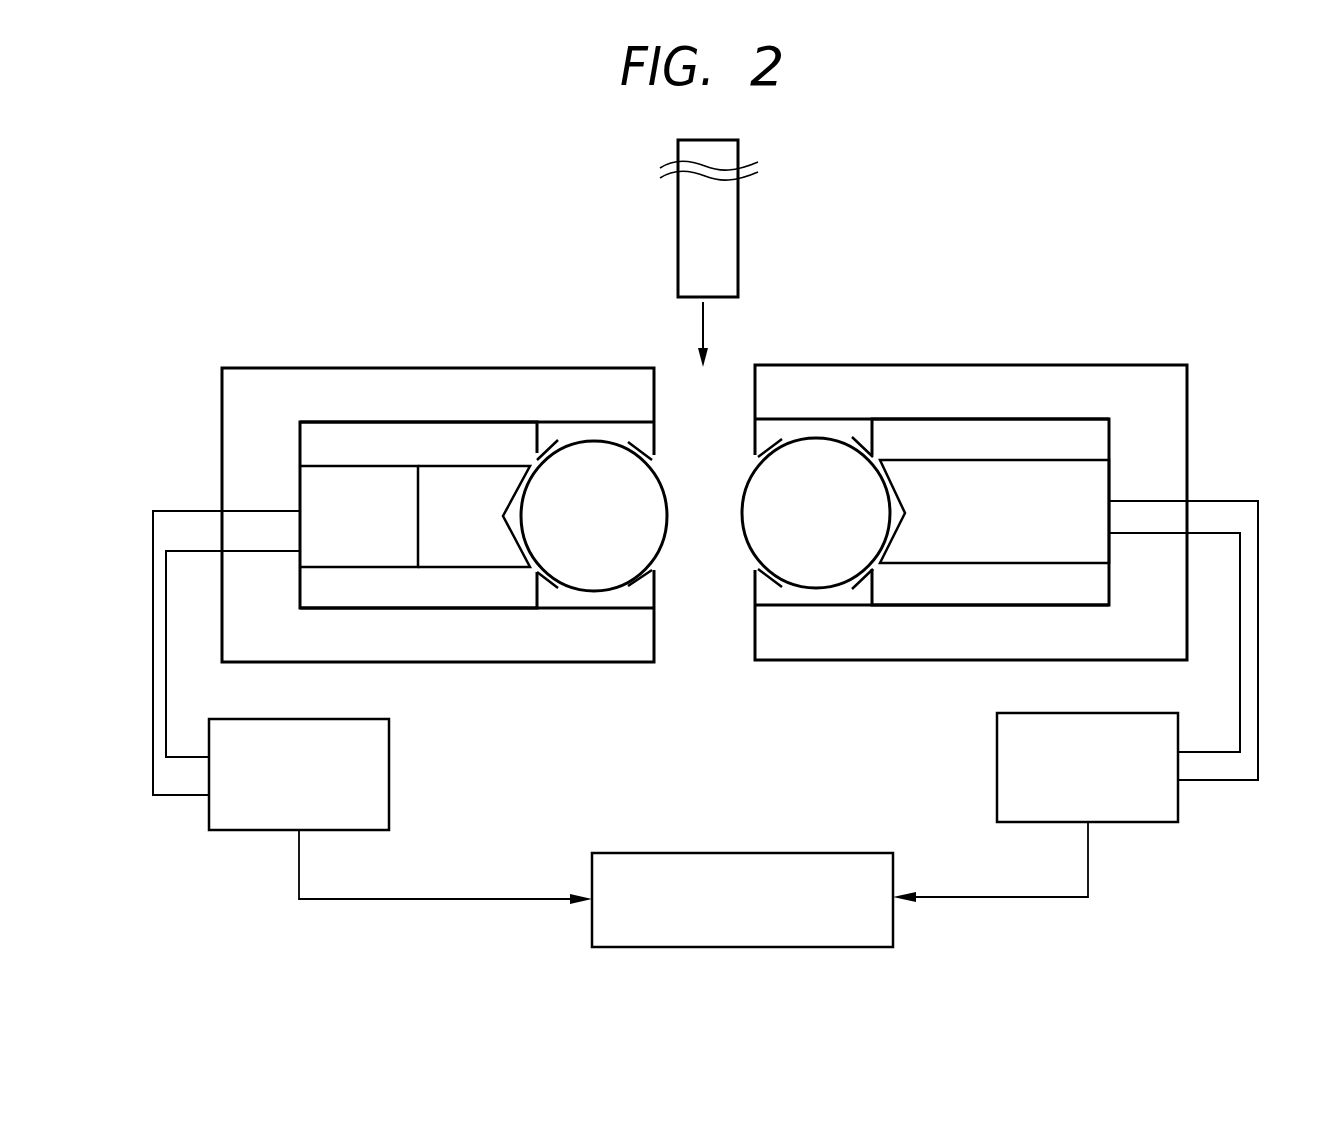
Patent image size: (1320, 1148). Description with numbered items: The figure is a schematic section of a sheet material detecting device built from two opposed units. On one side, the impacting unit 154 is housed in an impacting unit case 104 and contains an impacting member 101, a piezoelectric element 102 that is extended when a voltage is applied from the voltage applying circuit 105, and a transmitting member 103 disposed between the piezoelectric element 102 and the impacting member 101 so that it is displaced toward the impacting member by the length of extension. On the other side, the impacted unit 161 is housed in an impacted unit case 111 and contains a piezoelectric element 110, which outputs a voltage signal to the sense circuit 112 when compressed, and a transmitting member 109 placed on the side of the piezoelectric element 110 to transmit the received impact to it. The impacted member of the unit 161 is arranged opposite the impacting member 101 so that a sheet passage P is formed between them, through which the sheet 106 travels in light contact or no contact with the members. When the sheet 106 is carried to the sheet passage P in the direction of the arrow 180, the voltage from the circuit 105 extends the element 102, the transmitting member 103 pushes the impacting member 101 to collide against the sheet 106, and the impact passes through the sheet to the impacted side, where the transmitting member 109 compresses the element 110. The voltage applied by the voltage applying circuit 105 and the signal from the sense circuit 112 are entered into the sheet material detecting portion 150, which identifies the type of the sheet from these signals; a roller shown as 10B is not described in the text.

The impacted unit 161 is at (246, 336).
The impacted unit case 111 is at (237, 420).
The piezoelectric element 110 is at (379, 487).
The transmitting member 109 is at (453, 483).
The conveying roller 10B is at (664, 536).
The impacting member 101 is at (752, 524).
The transmitting member 103 is at (952, 483).
The piezoelectric element 102 is at (1045, 480).
The impacting unit case 104 is at (1187, 418).
The impacting unit 154 is at (1141, 326).
The sheet 106 is at (738, 197).
The arrow 180 is at (702, 330).
The sheet passage P is at (700, 490).
The sense circuit 112 is at (389, 785).
The voltage applying circuit 105 is at (997, 735).
The sheet material detecting portion 150 is at (768, 853).